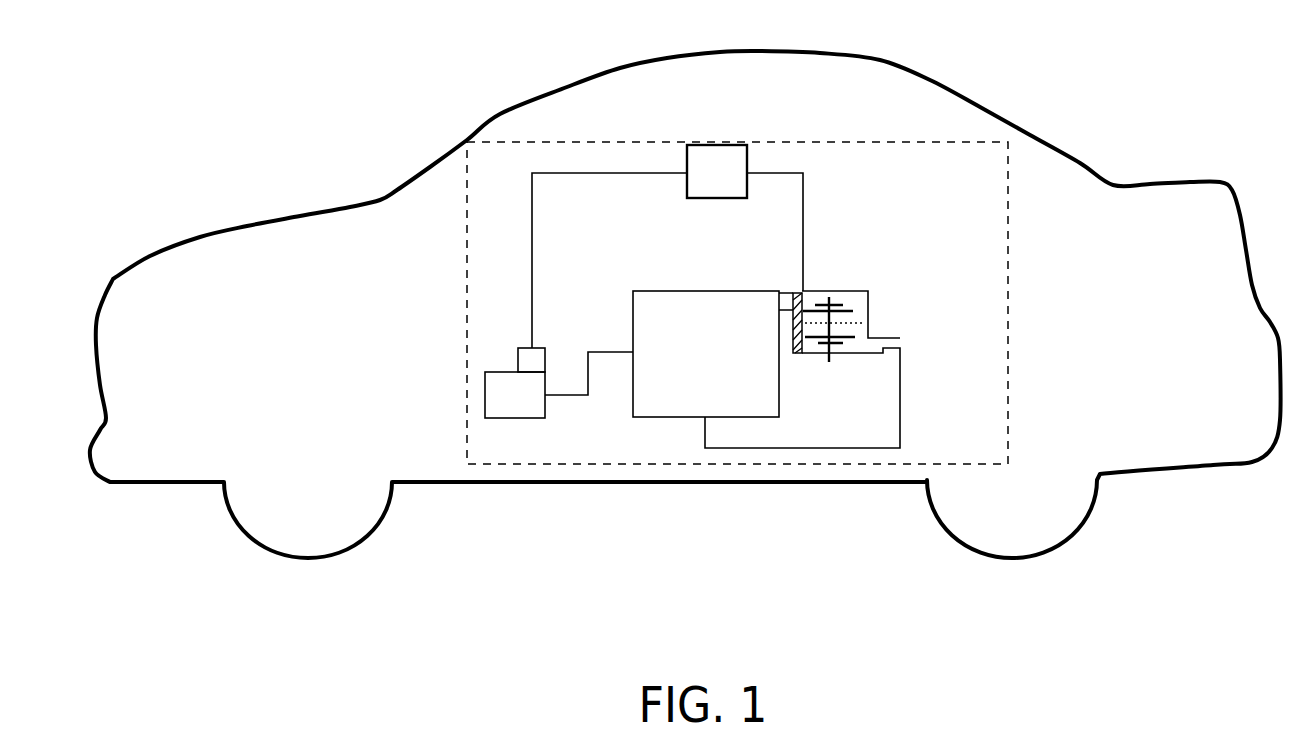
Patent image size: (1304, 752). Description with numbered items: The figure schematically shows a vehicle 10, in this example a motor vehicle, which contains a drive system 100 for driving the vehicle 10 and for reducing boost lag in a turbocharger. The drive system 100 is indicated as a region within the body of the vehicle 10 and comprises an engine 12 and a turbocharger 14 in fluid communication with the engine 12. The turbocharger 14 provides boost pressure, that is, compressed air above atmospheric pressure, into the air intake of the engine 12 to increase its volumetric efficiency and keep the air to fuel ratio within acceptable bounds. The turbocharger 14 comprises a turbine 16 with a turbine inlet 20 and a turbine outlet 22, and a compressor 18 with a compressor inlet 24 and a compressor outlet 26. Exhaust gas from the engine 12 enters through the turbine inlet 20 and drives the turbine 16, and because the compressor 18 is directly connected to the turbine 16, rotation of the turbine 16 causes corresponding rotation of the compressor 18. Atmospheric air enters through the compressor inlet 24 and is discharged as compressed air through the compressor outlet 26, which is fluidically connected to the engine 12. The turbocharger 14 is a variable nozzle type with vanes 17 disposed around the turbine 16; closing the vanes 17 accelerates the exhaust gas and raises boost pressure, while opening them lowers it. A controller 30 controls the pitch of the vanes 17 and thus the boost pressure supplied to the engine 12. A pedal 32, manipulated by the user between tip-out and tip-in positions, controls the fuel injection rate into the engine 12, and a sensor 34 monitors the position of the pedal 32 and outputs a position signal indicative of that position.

The vehicle 10 is at (685, 304).
The drive system 100 is at (467, 255).
The engine 12 is at (677, 386).
The turbocharger 14 is at (873, 322).
The turbine 16 is at (845, 291).
The vanes 17 is at (798, 355).
The compressor 18 is at (845, 355).
The turbine inlet 20 is at (790, 291).
The turbine outlet 22 is at (830, 290).
The compressor inlet 24 is at (829, 360).
The compressor outlet 26 is at (887, 338).
The controller 30 is at (720, 158).
The pedal 32 is at (497, 394).
The sensor 34 is at (525, 350).